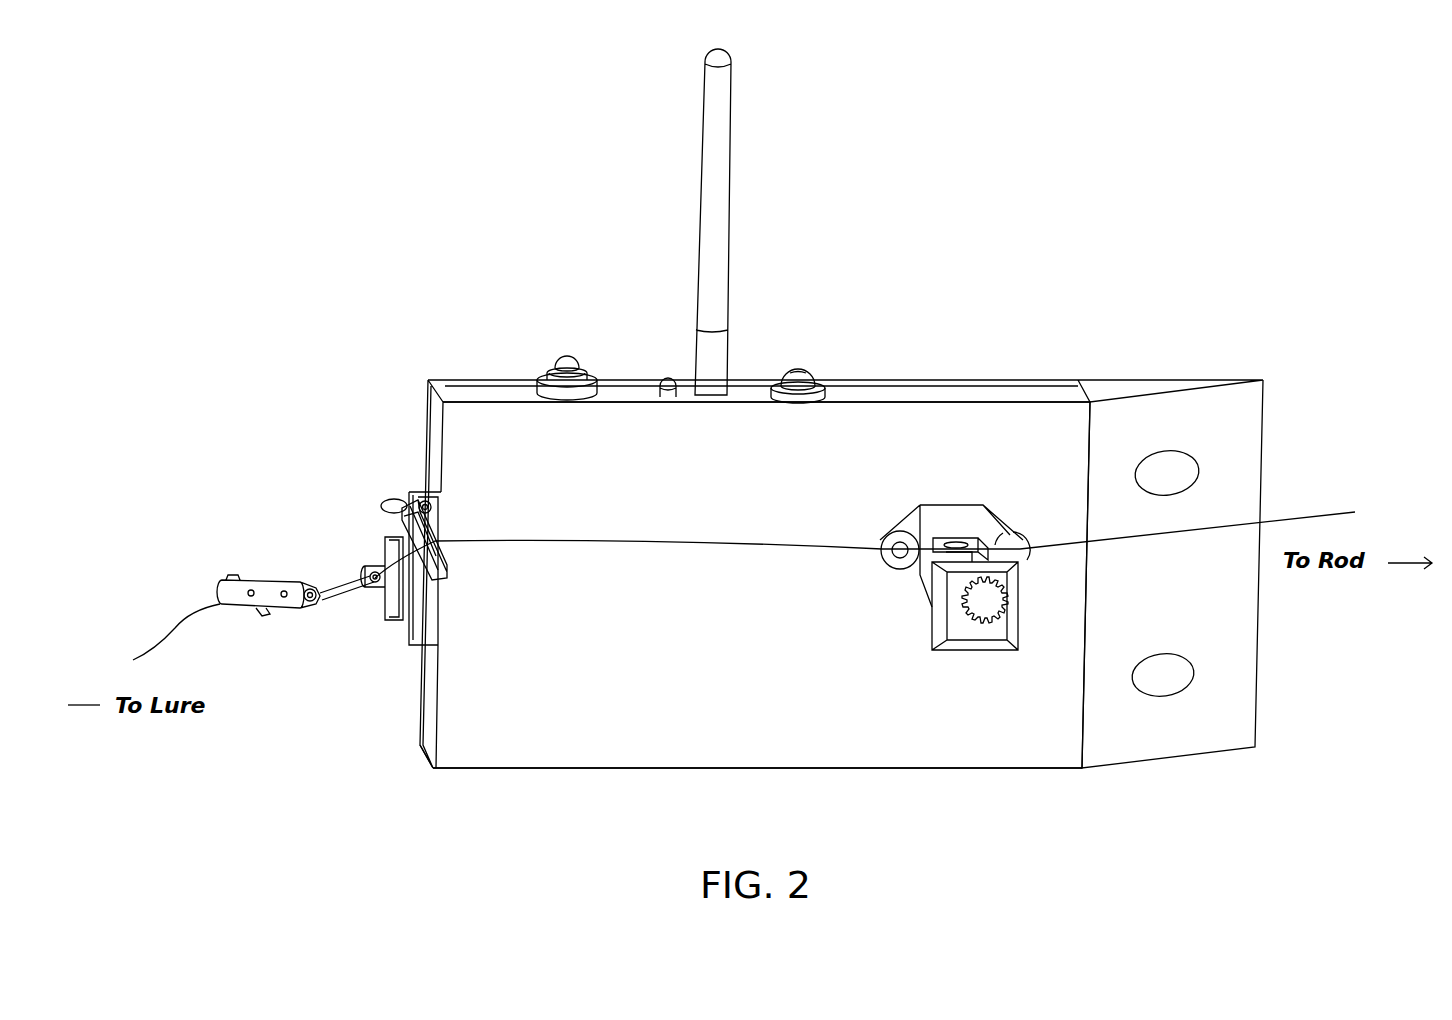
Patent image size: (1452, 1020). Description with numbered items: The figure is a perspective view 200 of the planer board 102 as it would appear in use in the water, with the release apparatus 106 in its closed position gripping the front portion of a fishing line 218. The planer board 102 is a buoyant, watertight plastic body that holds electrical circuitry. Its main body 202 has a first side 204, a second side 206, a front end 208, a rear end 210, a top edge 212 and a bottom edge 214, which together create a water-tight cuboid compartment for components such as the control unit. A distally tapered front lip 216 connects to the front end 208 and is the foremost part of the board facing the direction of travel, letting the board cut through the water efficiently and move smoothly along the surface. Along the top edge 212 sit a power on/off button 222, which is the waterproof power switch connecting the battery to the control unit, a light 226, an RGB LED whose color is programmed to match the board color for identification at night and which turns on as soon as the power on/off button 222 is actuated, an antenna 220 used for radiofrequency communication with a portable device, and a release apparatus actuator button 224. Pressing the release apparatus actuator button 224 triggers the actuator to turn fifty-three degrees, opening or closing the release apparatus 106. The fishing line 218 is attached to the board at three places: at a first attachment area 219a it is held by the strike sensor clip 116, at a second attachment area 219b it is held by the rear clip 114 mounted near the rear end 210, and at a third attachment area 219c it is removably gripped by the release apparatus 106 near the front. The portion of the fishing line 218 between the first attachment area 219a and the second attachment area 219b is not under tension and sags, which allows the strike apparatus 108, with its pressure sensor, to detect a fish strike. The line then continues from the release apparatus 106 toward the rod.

The perspective view 200 is at (1205, 160).
The planer board 102 is at (747, 447).
The release apparatus 106 is at (960, 503).
The strike apparatus 108 is at (372, 540).
The rear clip 114 is at (433, 520).
The strike sensor clip 116 is at (232, 576).
The main body 202 is at (834, 579).
The first side 204 is at (492, 716).
The second side 206 is at (412, 735).
The front end 208 is at (1079, 379).
The rear end 210 is at (428, 408).
The top edge 212 is at (1013, 397).
The bottom edge 214 is at (968, 770).
The front lip 216 is at (1233, 425).
The fishing line 218 is at (1338, 510).
The first attachment area 219a is at (268, 626).
The second attachment area 219b is at (466, 563).
The third attachment area 219c is at (886, 576).
The antenna 220 is at (731, 150).
The power on/off button 222 is at (570, 354).
The release apparatus actuator button 224 is at (798, 368).
The light 226 is at (668, 378).